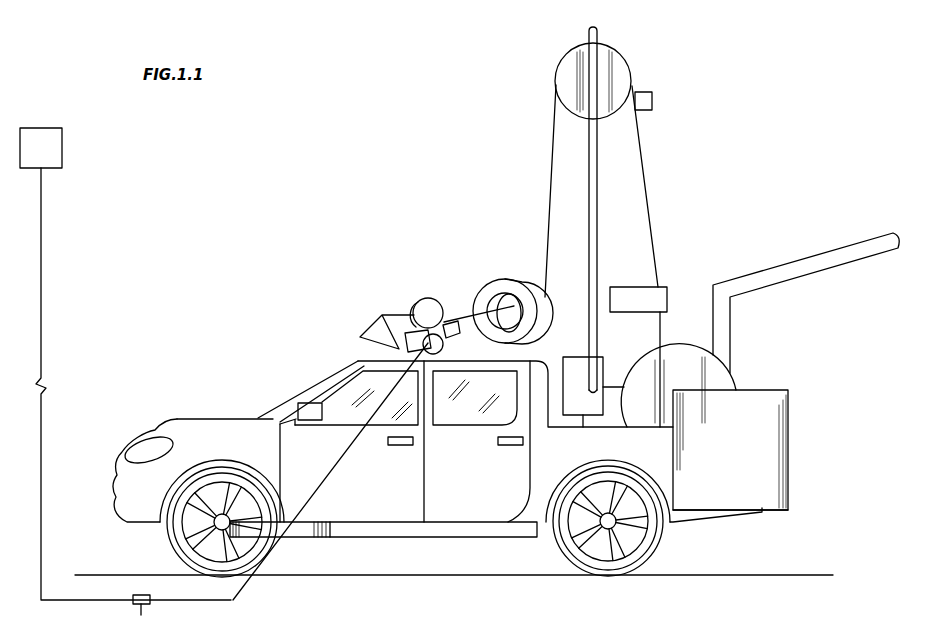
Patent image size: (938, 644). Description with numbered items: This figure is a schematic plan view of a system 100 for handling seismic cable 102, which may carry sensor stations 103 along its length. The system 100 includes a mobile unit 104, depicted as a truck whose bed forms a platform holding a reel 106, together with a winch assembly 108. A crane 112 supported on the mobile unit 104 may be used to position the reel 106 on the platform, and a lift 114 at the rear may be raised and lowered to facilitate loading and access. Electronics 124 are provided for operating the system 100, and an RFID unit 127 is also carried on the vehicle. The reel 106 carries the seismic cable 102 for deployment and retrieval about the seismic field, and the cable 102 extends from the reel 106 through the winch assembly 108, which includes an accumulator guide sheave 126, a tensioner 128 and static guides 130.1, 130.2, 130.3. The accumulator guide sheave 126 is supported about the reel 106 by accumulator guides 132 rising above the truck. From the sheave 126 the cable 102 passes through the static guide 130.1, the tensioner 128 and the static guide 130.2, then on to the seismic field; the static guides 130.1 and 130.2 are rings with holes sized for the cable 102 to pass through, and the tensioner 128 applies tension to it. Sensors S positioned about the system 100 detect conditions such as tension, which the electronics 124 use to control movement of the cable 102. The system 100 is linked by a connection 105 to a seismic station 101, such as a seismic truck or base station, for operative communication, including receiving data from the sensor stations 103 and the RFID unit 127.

The system 100 is at (834, 136).
The seismic station 101 is at (54, 158).
The seismic cable 102 is at (647, 157).
The sensor stations 103 is at (133, 600).
The mobile unit 104 is at (146, 433).
The communication cable 105 is at (42, 277).
The reel 106 is at (733, 380).
The winch assembly 108 is at (452, 285).
The crane 112 is at (838, 267).
The lift 114 is at (750, 516).
The electronics 124 is at (790, 428).
The accumulator guide sheave 126 is at (617, 62).
The RFID unit 127 is at (360, 322).
The tensioner 128 is at (414, 304).
The static guide 130.1 is at (500, 278).
The static guide 130.2 is at (300, 536).
The static guide 130.3 is at (662, 285).
The accumulator guides 132 is at (588, 33).
The sensors S is at (652, 98).